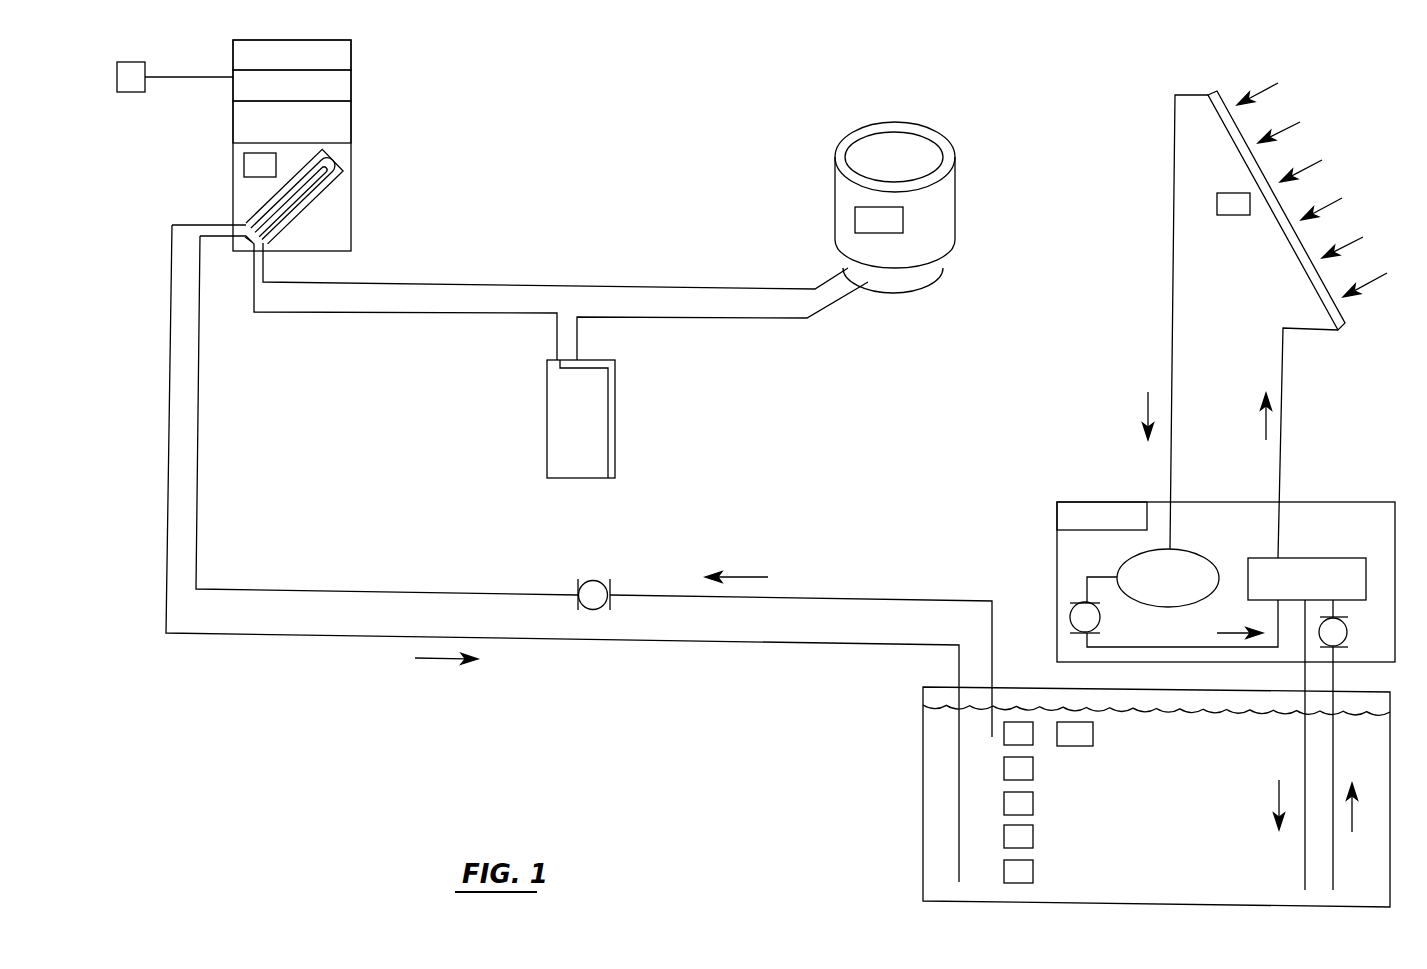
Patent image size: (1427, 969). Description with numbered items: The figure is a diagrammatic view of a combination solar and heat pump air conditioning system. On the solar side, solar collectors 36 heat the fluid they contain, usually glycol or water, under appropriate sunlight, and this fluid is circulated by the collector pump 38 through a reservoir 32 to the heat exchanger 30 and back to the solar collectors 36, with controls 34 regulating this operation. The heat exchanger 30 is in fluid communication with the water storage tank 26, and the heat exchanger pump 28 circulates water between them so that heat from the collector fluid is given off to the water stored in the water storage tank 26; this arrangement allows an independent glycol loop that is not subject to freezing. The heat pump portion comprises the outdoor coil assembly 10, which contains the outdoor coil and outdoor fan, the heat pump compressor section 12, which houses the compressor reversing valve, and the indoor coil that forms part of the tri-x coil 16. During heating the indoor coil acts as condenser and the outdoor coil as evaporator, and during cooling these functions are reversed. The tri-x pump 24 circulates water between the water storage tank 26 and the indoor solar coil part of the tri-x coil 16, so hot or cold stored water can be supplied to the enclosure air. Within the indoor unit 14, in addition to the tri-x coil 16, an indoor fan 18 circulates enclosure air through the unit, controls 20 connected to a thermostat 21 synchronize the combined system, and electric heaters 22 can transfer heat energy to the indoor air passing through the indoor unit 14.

The outdoor coil assembly 10 is at (1004, 156).
The heat pump compressor section 12 is at (651, 411).
The indoor unit 14 is at (367, 145).
The tri-x coil 16 is at (322, 195).
The indoor fan 18 is at (292, 122).
The controls 20 is at (292, 85).
The thermostat 21 is at (148, 95).
The electric heaters 22 is at (292, 55).
The tri-x pump 24 is at (603, 578).
The water storage tank 26 is at (1156, 797).
The heat exchanger pump 28 is at (1352, 632).
The heat exchanger 30 is at (1307, 579).
The reservoir 32 is at (1168, 578).
The controls 34 is at (1226, 565).
The solar collectors 36 is at (1275, 218).
The collector pump 38 is at (1100, 623).